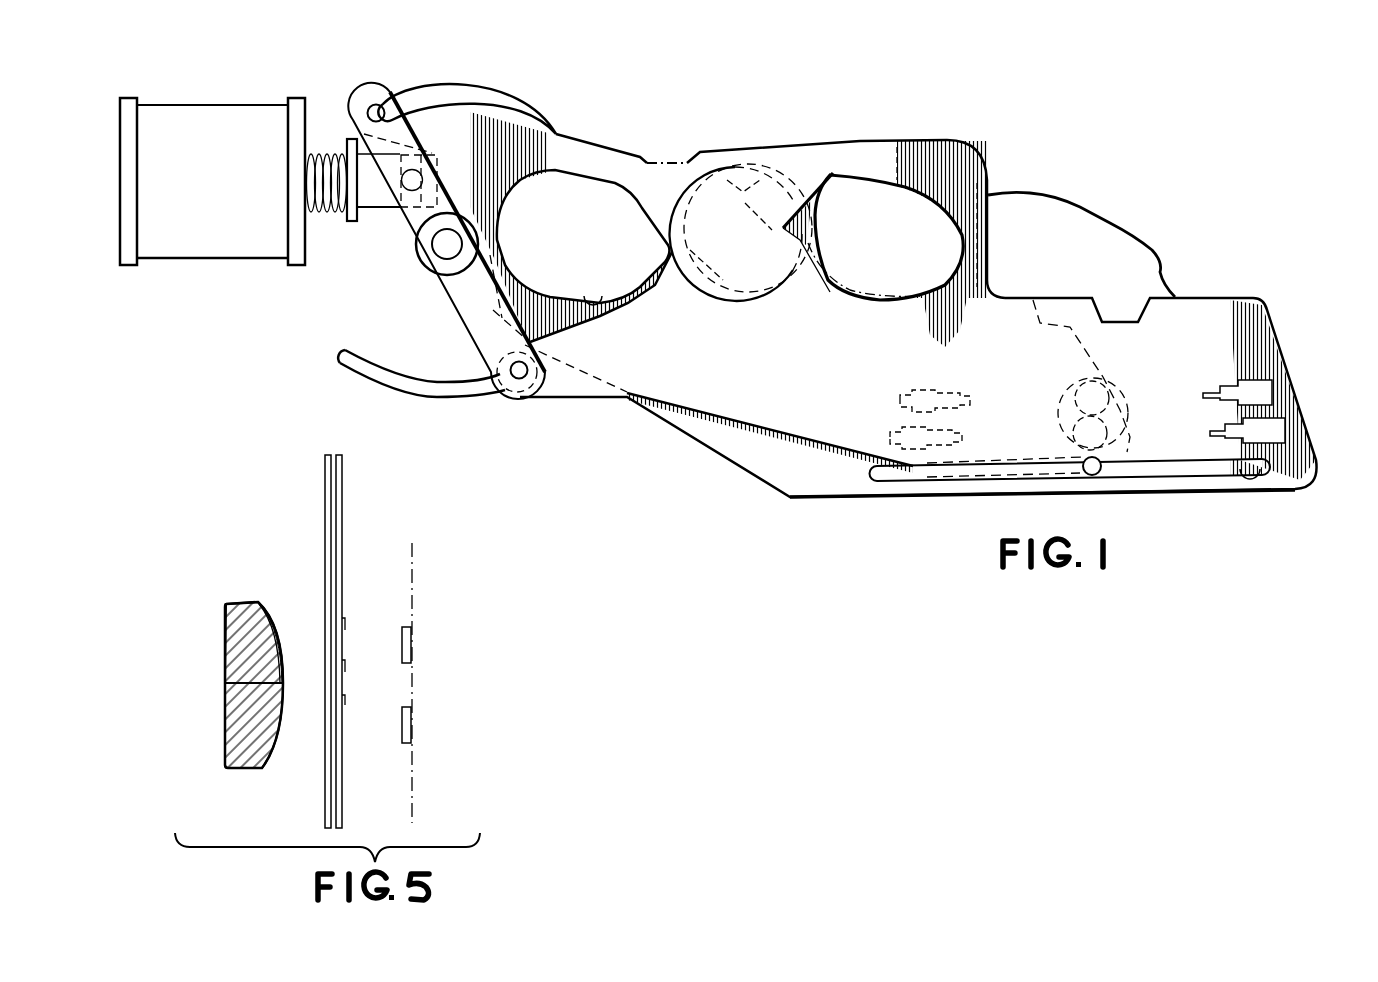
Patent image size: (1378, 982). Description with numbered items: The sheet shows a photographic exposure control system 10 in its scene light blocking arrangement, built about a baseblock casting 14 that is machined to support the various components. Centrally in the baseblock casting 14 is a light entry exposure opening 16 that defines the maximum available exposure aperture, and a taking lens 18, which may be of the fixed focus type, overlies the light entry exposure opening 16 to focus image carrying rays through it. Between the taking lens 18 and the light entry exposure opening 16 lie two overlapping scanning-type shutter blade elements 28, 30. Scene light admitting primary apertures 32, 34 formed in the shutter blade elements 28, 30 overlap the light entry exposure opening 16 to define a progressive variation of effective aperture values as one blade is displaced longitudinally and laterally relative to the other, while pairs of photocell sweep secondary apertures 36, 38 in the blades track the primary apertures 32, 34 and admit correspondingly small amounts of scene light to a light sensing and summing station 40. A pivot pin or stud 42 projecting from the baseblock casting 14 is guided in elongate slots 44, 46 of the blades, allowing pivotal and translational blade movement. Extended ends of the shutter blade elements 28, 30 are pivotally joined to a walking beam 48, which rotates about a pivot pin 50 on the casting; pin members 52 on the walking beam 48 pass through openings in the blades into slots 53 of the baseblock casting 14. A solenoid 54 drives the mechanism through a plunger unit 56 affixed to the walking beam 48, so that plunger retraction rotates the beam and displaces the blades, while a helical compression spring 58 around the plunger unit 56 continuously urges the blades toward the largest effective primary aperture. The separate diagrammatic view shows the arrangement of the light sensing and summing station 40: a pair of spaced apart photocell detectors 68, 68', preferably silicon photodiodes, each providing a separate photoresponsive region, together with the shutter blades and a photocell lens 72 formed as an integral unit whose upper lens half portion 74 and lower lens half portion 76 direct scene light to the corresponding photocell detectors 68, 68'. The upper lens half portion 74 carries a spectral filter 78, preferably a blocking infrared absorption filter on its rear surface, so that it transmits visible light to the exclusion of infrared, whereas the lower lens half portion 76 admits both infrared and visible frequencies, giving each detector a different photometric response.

In FIG. 1, the photographic exposure control system 10 is at (1026, 188).
In FIG. 1, the baseblock casting 14 is at (1073, 252).
In FIG. 1, the light entry exposure opening 16 is at (770, 159).
In FIG. 1, the taking lens 18 is at (688, 192).
In FIG. 1, the shutter blade element 28 is at (568, 137).
In FIG. 1, the shutter blade element 30 is at (1213, 300).
In FIG. 1, the primary aperture 32 is at (602, 303).
In FIG. 1, the primary aperture 34 is at (871, 186).
In FIG. 1, the photocell sweep secondary apertures 36 is at (1259, 387).
In FIG. 1, the photocell sweep secondary apertures 38 is at (1274, 437).
In FIG. 1, the light sensing and summing station 40 is at (1132, 393).
In FIG. 1, the pivot pin or stud 42 is at (1094, 473).
In FIG. 1, the elongate slot 44 is at (913, 482).
In FIG. 1, the elongate slot 46 is at (1262, 489).
In FIG. 1, the walking beam 48 is at (457, 317).
In FIG. 1, the pivot pin 50 is at (433, 248).
In FIG. 1, the pin members 52 is at (379, 108).
In FIG. 1, the slots 53 is at (509, 107).
In FIG. 1, the solenoid 54 is at (223, 100).
In FIG. 1, the plunger unit 56 is at (380, 208).
In FIG. 1, the helical compression spring 58 is at (323, 216).
In FIG. 1, the photocell detector 68 is at (1080, 404).
In FIG. 5, the photocell detector 68 is at (434, 628).
In FIG. 1, the photocell detector 68' is at (1127, 433).
In FIG. 5, the photocell detector 68' is at (438, 714).
In FIG. 5, the photocell lens 72 is at (224, 621).
In FIG. 5, the upper lens half portion 74 is at (243, 604).
In FIG. 5, the lower lens half portion 76 is at (227, 725).
In FIG. 5, the spectral filter 78 is at (276, 626).